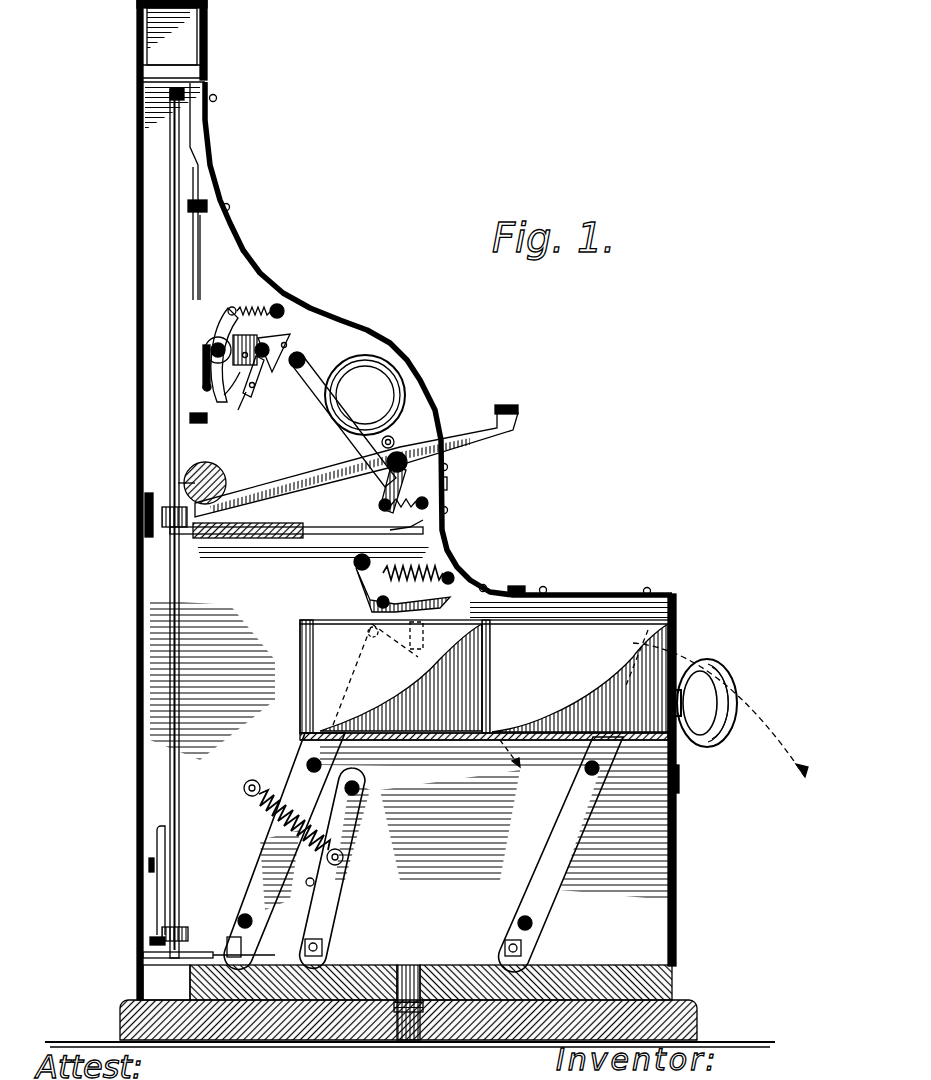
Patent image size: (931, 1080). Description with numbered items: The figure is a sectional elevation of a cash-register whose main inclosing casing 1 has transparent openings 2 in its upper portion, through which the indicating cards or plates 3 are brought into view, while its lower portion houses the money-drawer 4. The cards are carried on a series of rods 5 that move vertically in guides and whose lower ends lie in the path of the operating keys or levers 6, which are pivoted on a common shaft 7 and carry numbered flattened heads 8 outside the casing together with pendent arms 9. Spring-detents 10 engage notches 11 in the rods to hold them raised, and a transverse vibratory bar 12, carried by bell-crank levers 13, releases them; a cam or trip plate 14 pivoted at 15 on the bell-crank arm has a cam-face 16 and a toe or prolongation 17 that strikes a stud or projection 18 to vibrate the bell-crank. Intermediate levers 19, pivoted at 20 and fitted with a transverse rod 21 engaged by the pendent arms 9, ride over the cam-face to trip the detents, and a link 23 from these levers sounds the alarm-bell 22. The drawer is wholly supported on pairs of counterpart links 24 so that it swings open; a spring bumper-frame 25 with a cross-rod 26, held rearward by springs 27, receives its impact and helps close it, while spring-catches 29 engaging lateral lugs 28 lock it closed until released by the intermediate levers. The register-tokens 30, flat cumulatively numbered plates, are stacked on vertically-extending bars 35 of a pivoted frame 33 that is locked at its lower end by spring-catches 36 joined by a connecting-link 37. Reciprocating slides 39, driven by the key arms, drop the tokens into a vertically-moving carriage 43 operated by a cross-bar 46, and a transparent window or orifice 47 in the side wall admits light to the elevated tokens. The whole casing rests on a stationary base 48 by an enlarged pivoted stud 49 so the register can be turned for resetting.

The main inclosing casing 1 is at (410, 523).
The transparent openings 2 is at (200, 42).
The indicating cards or plates 3 is at (191, 130).
The money-drawer 4 is at (564, 700).
The rods 5 is at (204, 262).
The operating keys or levers 6 is at (282, 494).
The common shaft 7 is at (402, 454).
The flattened heads 8 is at (506, 402).
The pendent arms 9 is at (400, 481).
The spring-detents 10 is at (227, 318).
The notches 11 is at (228, 463).
The vibratory bar or rod 12 is at (203, 389).
The bell-crank levers 13 is at (168, 363).
The cam or trip plate 14 is at (287, 343).
The pivot 15 is at (266, 346).
The cam-face 16 is at (265, 376).
The toe or prolongation 17 is at (241, 410).
The stud or projection 18 is at (236, 389).
The intermediate levers 19 is at (313, 386).
The pivot 20 is at (375, 603).
The transverse rod 21 is at (379, 504).
The alarm-bell 22 is at (365, 395).
The link 23 is at (382, 443).
The counterpart links 24 is at (312, 755).
The spring bumper-frame 25 is at (356, 824).
The cross-rod 26 is at (366, 791).
The springs 27 is at (270, 812).
The lateral lugs 28 is at (424, 634).
The spring-catches 29 is at (400, 592).
The register-tokens 30 is at (145, 510).
The vertically-arranged frame 33 is at (170, 95).
The vertically-extending bars 35 is at (170, 160).
The spring-catches 36 is at (186, 966).
The connecting-link 37 is at (208, 952).
The reciprocating slides 39 is at (310, 527).
The vertically-moving carriage 43 is at (157, 897).
The cross-bar 46 is at (149, 866).
The transparent window or orifice 47 is at (183, 483).
The stationary base 48 is at (408, 1033).
The pivoted stud 49 is at (412, 965).